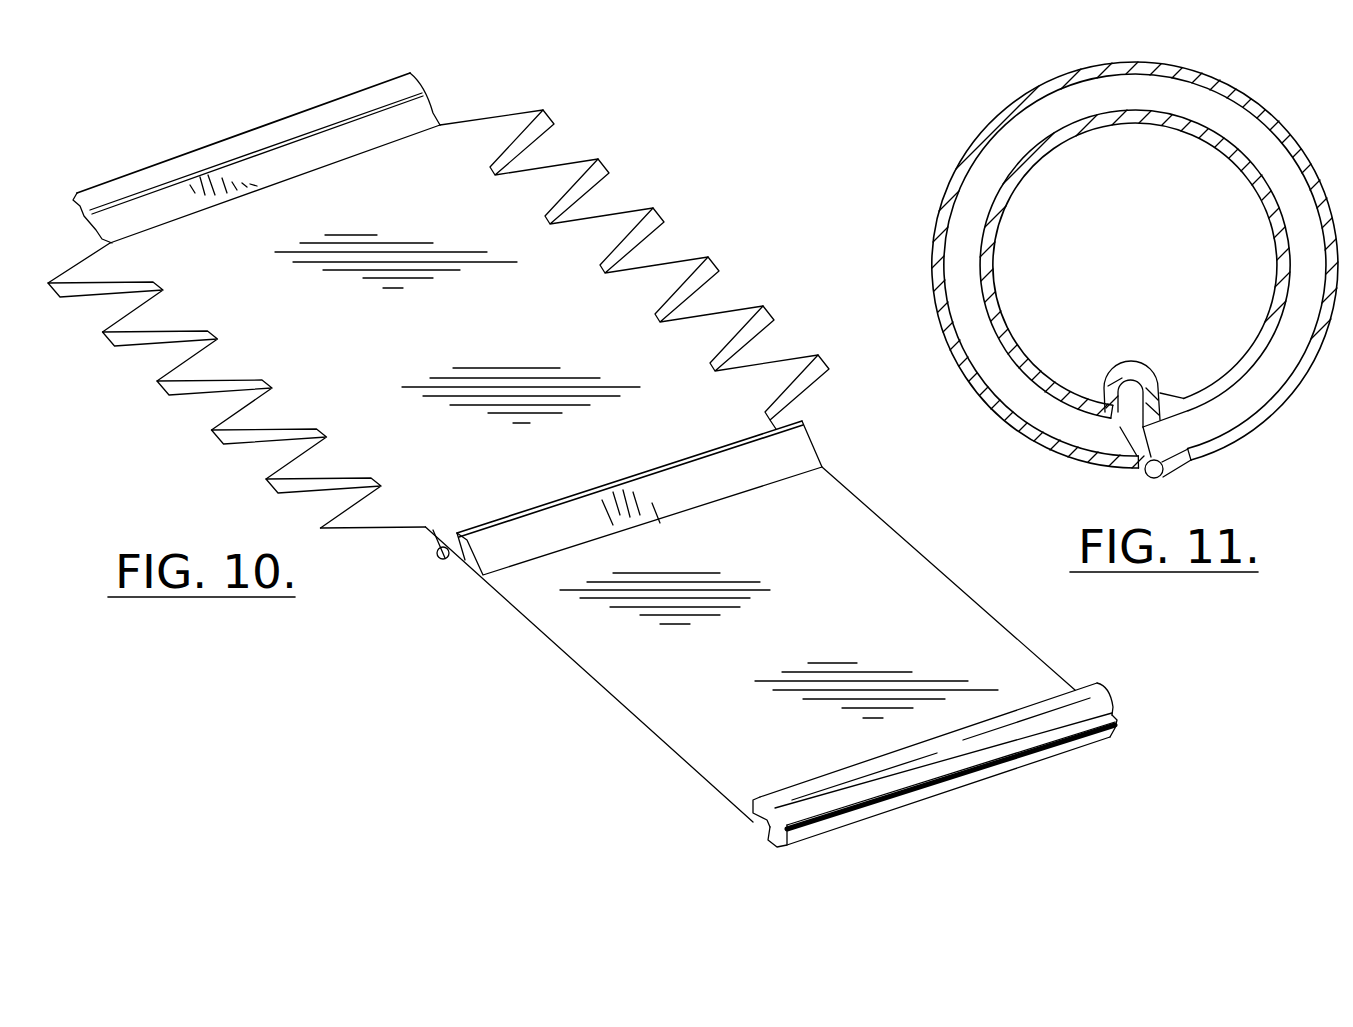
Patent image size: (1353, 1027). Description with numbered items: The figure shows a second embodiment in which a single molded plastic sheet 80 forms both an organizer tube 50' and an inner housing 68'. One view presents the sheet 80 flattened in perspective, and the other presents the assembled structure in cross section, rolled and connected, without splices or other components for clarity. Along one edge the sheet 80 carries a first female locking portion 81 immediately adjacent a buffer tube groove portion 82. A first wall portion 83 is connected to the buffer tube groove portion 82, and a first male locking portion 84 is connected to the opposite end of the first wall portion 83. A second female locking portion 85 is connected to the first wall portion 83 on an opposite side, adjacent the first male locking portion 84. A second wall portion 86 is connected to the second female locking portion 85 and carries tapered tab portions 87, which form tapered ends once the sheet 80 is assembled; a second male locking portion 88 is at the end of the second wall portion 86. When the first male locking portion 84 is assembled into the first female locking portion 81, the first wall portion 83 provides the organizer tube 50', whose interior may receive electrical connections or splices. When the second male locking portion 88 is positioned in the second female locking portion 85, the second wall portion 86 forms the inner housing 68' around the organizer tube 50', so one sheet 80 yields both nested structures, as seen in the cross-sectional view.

In FIG. 10, the molded plastic sheet 80 is at (597, 123).
In FIG. 11, the molded plastic sheet 80 is at (1270, 88).
In FIG. 10, the first female locking portion 81 is at (1116, 723).
In FIG. 11, the first female locking portion 81 is at (1143, 420).
In FIG. 10, the buffer tube groove portion 82 is at (1097, 700).
In FIG. 11, the buffer tube groove portion 82 is at (1108, 368).
In FIG. 10, the first wall portion 83 is at (912, 583).
In FIG. 11, the first wall portion 83 is at (1023, 153).
In FIG. 10, the first male locking portion 84 is at (805, 422).
In FIG. 11, the first male locking portion 84 is at (1173, 407).
In FIG. 10, the second female locking portion 85 is at (435, 557).
In FIG. 11, the second female locking portion 85 is at (1147, 477).
In FIG. 10, the second wall portion 86 is at (423, 165).
In FIG. 11, the second wall portion 86 is at (1158, 67).
In FIG. 10, the tapered tab portions 87 is at (693, 270).
In FIG. 10, the second male locking portion 88 is at (403, 90).
In FIG. 11, the second male locking portion 88 is at (1177, 460).
In FIG. 11, the inner housing 68' is at (1117, 265).
In FIG. 11, the organizer tube 50' is at (1093, 264).